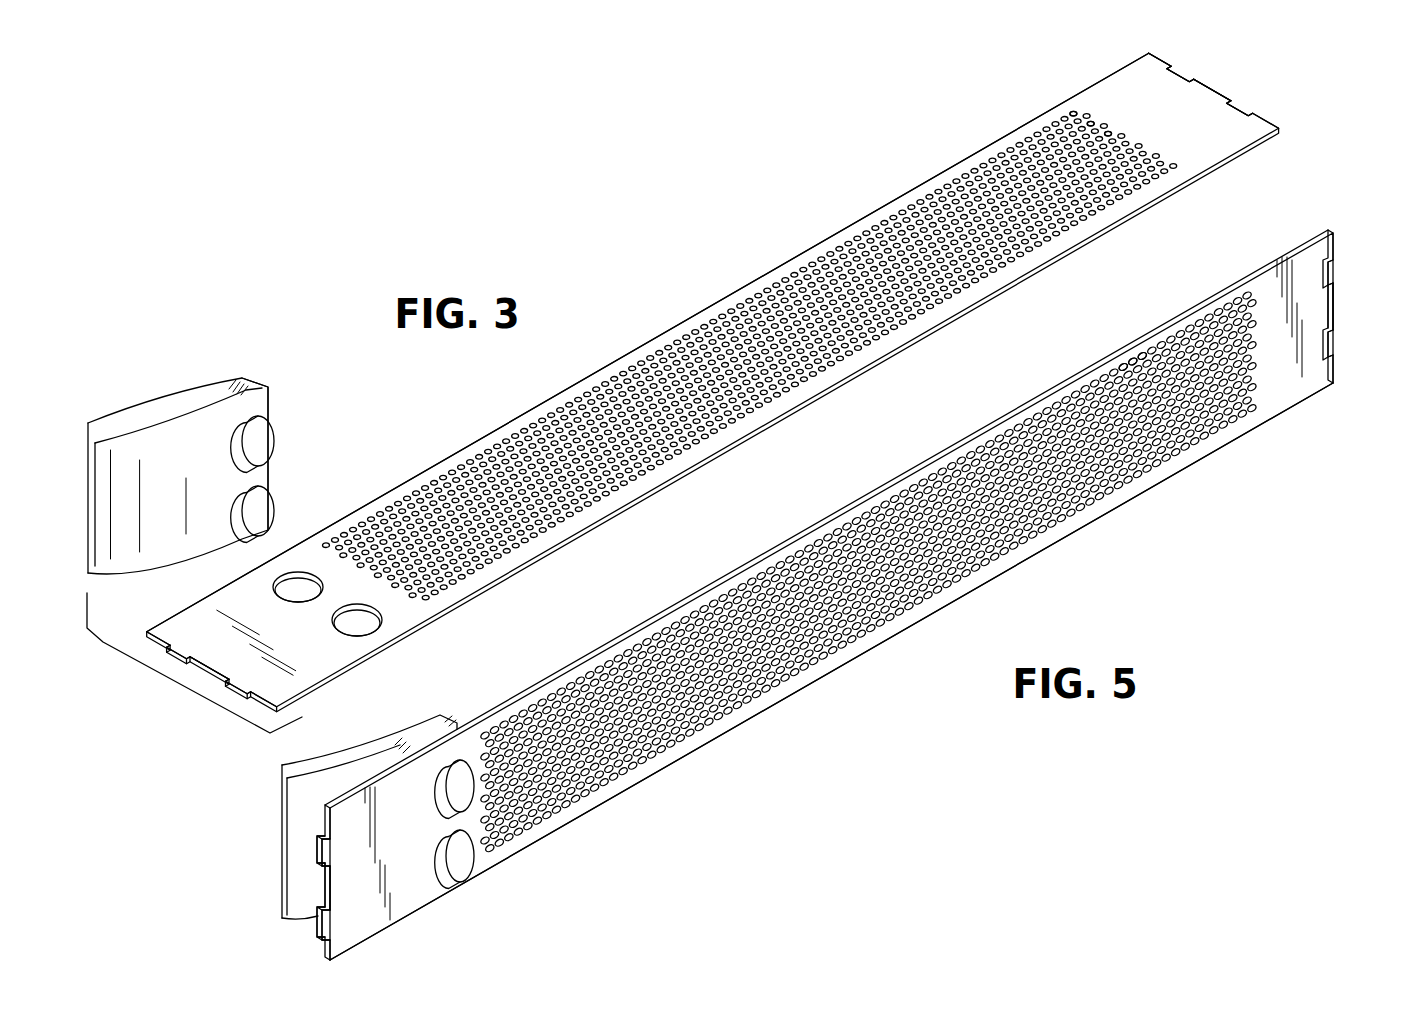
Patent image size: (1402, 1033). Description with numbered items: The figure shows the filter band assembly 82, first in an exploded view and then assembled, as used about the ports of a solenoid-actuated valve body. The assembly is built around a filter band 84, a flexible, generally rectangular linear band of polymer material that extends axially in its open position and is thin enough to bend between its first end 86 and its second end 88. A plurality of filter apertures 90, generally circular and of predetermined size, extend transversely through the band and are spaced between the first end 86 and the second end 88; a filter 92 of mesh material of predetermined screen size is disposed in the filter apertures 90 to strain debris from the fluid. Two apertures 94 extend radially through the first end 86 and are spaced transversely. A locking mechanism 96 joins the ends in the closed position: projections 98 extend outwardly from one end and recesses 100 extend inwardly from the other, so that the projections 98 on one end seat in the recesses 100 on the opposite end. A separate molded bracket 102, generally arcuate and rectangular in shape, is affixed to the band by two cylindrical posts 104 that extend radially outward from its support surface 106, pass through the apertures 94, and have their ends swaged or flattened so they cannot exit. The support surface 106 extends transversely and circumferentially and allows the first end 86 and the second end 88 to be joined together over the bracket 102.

In FIG. 3, the filter band assembly 82 is at (726, 226).
In FIG. 5, the filter band assembly 82 is at (1340, 196).
In FIG. 3, the filter band 84 is at (889, 200).
In FIG. 5, the filter band 84 is at (1172, 478).
In FIG. 3, the first end 86 is at (259, 597).
In FIG. 5, the first end 86 is at (407, 878).
In FIG. 3, the second end 88 is at (1127, 92).
In FIG. 5, the second end 88 is at (1277, 383).
In FIG. 3, the filter aperture 90 is at (1082, 108).
In FIG. 5, the filter aperture 90 is at (1130, 368).
In FIG. 3, the filter 92 is at (655, 390).
In FIG. 5, the filter 92 is at (930, 495).
In FIG. 3, the aperture 94 is at (302, 590).
In FIG. 3, the locking mechanism 96 is at (1262, 108).
In FIG. 3, the projection 98 is at (162, 657).
In FIG. 5, the projection 98 is at (317, 852).
In FIG. 3, the recess 100 is at (210, 668).
In FIG. 5, the recess 100 is at (323, 887).
In FIG. 3, the bracket 102 is at (151, 413).
In FIG. 5, the bracket 102 is at (392, 743).
In FIG. 3, the post 104 is at (272, 511).
In FIG. 5, the post 104 is at (470, 793).
In FIG. 3, the support surface 106 is at (261, 415).